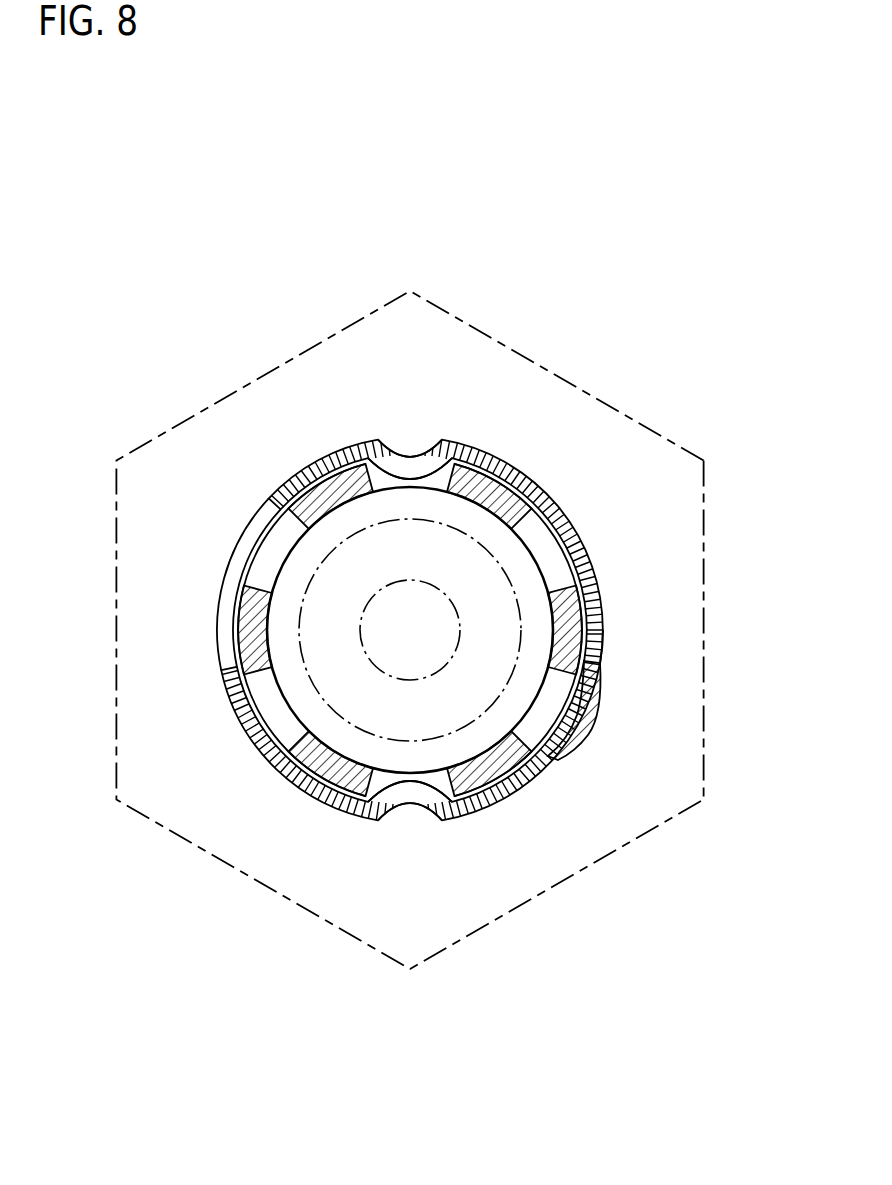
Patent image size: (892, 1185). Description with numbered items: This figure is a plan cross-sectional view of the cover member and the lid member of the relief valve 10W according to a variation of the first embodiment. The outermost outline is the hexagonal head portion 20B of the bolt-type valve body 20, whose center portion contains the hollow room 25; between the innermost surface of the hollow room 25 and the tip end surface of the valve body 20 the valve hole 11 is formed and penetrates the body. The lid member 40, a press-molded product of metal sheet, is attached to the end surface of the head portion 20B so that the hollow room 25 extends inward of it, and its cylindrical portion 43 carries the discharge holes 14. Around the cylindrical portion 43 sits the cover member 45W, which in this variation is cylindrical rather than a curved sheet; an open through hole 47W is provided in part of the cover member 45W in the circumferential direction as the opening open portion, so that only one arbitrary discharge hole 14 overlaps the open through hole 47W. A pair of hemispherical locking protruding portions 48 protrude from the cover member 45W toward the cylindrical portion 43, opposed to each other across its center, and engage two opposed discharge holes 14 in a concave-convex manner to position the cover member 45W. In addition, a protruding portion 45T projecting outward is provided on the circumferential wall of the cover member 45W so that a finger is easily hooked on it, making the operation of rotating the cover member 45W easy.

The relief valve 10W is at (622, 315).
The valve body 20 is at (670, 437).
The head portion 20B is at (703, 493).
The discharge hole 14 is at (380, 456).
The open through hole 47W is at (255, 512).
The locking protruding portion 48 is at (432, 458).
The protruding portion 45T is at (588, 723).
The cover member 45W is at (598, 660).
The lid member 40 is at (410, 524).
The cylindrical portion 43 is at (327, 487).
The hollow room 25 is at (340, 581).
The valve hole 11 is at (382, 676).